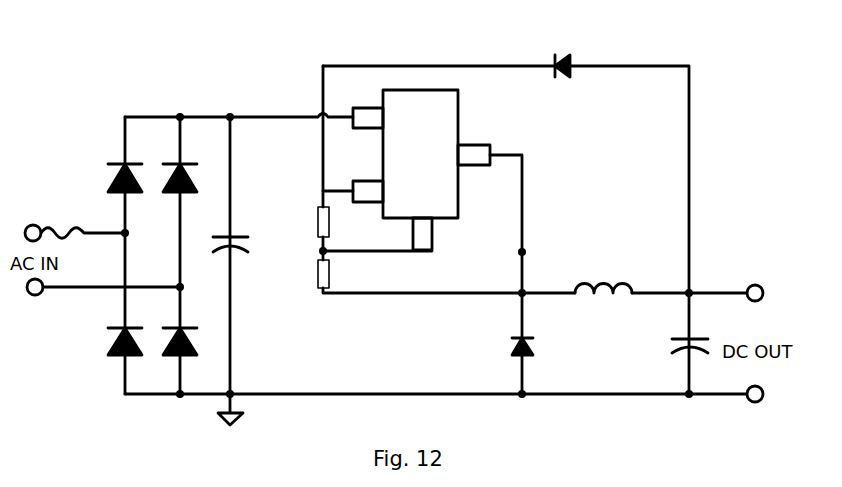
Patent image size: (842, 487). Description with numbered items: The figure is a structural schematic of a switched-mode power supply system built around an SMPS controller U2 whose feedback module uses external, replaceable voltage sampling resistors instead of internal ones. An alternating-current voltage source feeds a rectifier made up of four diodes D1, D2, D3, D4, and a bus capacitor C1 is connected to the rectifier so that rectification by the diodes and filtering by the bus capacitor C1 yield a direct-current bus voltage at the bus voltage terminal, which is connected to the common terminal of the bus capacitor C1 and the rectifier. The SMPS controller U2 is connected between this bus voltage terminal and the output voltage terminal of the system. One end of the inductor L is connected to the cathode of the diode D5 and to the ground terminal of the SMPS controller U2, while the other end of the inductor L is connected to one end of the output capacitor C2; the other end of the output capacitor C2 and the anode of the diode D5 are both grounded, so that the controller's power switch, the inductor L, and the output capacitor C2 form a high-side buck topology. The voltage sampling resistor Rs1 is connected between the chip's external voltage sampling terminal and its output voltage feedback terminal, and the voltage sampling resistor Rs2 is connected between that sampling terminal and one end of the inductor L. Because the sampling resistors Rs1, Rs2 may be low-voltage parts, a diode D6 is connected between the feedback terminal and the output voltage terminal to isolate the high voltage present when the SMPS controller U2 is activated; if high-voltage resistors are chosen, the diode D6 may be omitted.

The diode D1 is at (107, 179).
The diode D2 is at (115, 356).
The diode D3 is at (193, 179).
The diode D4 is at (188, 356).
The diode D5 is at (505, 353).
The diode D6 is at (554, 52).
The bus capacitor C1 is at (244, 250).
The output capacitor C2 is at (672, 351).
The inductor L is at (603, 275).
The SMPS controller U2 is at (425, 170).
The voltage sampling resistor Rs1 is at (306, 222).
The voltage sampling resistor Rs2 is at (306, 275).